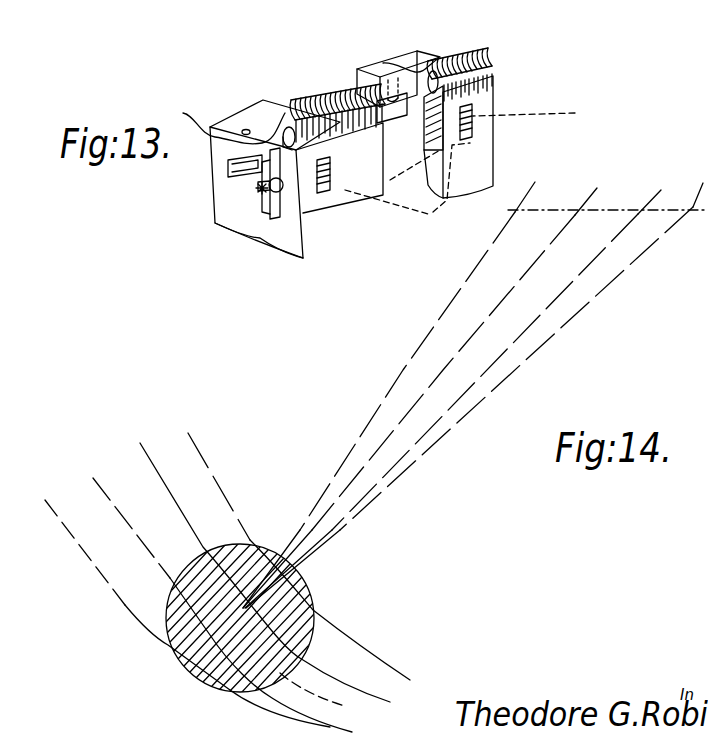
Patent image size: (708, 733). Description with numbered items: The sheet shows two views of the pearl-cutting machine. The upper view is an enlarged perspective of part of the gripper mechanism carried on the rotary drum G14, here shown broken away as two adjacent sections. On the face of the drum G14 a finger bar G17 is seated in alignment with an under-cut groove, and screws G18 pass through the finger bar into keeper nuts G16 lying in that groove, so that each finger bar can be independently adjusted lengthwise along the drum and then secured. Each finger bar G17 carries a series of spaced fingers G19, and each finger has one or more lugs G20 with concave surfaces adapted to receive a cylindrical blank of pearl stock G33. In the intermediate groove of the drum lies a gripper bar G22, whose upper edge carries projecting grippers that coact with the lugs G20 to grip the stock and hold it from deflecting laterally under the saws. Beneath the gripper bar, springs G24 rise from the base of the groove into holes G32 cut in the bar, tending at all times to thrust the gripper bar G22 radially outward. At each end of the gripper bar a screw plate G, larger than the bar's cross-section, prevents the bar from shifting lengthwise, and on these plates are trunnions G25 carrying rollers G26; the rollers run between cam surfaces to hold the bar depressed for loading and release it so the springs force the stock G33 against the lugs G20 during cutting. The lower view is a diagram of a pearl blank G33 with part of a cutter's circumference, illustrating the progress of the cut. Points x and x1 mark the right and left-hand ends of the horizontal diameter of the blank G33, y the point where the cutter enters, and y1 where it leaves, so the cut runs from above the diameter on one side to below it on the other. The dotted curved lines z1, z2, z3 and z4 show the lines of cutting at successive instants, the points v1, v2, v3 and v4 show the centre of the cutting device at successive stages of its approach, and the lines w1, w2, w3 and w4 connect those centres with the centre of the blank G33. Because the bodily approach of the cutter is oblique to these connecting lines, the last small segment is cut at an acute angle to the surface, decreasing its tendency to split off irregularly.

In FIG. 13, the drum G14 is at (233, 216).
In FIG. 13, the keeper nuts G16 is at (240, 170).
In FIG. 13, the finger bars G17 is at (440, 28).
In FIG. 13, the screws G18 is at (245, 129).
In FIG. 13, the fingers G19 is at (335, 98).
In FIG. 13, the lugs G20 is at (289, 127).
In FIG. 13, the gripper bar G22 is at (305, 203).
In FIG. 13, the springs G24 is at (407, 188).
In FIG. 13, the trunnions G25 is at (263, 195).
In FIG. 13, the rollers G26 is at (276, 212).
In FIG. 13, the holes G32 is at (497, 143).
In FIG. 13, the pearl stock blank G33 is at (331, 152).
In FIG. 14, the pearl stock blank G33 is at (312, 600).
In FIG. 13, the screw plates G is at (302, 212).
In FIG. 14, the centre of the cutting device v1 is at (477, 391).
In FIG. 14, the centre of the cutting device v2 is at (459, 391).
In FIG. 14, the centre of the cutting device v3 is at (425, 390).
In FIG. 14, the centre of the cutting device v4 is at (397, 390).
In FIG. 14, the line connecting centers w1 is at (620, 278).
In FIG. 14, the line connecting centers w2 is at (575, 274).
In FIG. 14, the line connecting centers w3 is at (531, 265).
In FIG. 14, the line connecting centers w4 is at (456, 296).
In FIG. 14, the line of cutting z1 is at (270, 548).
In FIG. 14, the line of cutting z2 is at (223, 550).
In FIG. 14, the line of cutting z3 is at (183, 592).
In FIG. 14, the line of cutting z4 is at (166, 617).
In FIG. 14, the right-hand end of the horizontal diameter x is at (313, 615).
In FIG. 14, the cutter entry point y is at (297, 568).
In FIG. 14, the left-hand end of the horizontal diameter x1 is at (165, 616).
In FIG. 14, the cutter exit point y1 is at (197, 680).